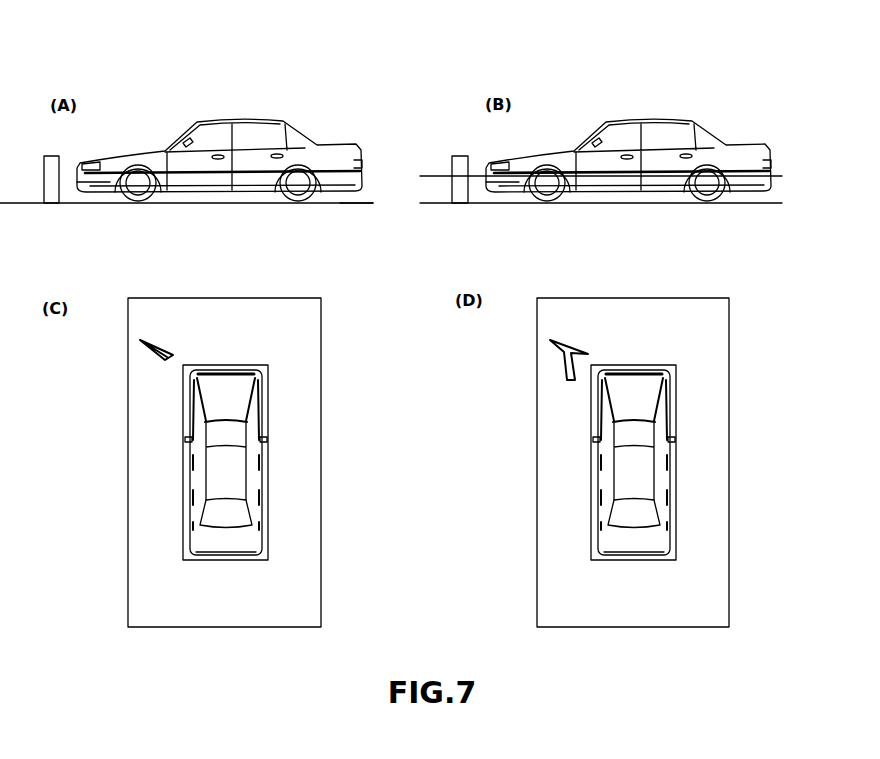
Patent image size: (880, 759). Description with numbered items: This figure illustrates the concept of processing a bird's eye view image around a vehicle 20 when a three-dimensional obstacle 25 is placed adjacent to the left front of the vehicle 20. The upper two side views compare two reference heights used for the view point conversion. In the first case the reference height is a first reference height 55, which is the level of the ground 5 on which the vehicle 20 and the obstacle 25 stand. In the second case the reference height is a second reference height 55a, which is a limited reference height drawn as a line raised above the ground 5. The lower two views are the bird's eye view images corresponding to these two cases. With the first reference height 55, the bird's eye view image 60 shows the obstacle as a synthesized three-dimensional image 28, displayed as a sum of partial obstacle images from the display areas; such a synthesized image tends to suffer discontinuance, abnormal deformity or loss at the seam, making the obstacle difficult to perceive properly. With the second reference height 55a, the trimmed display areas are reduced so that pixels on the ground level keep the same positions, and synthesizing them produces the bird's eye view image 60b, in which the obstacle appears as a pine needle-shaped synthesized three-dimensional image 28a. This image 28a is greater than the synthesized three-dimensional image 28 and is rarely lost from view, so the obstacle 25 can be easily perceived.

The ground 5 is at (333, 203).
The vehicle 20 is at (262, 133).
The three-dimensional obstacle 25 is at (55, 155).
The first reference height 55 is at (363, 202).
The second reference height 55a is at (778, 175).
The bird's eye view image 60 is at (322, 460).
The bird's eye view image for the reference height 2 60b is at (730, 442).
The synthesized three-dimensional image 28 is at (147, 356).
The pine needle-shaped synthesized three-dimensional image 28a is at (552, 356).